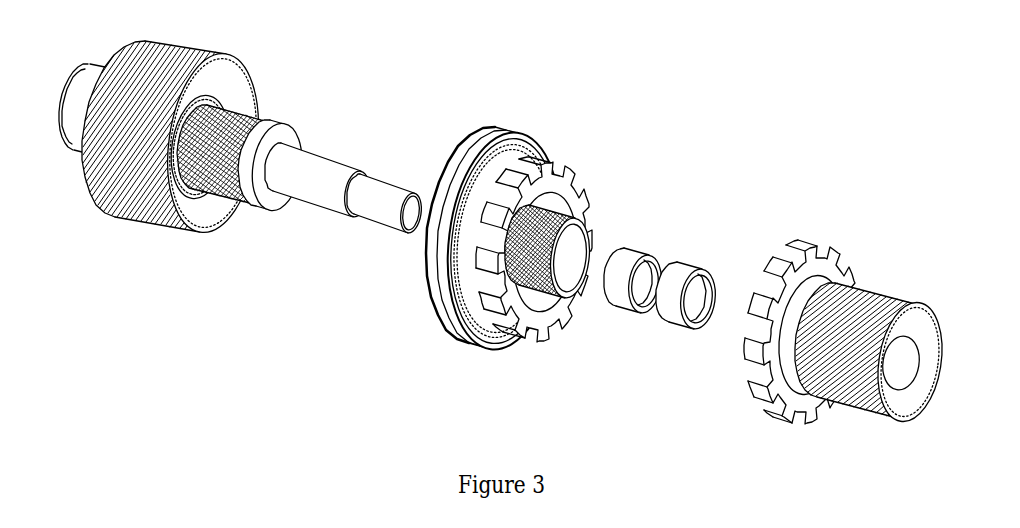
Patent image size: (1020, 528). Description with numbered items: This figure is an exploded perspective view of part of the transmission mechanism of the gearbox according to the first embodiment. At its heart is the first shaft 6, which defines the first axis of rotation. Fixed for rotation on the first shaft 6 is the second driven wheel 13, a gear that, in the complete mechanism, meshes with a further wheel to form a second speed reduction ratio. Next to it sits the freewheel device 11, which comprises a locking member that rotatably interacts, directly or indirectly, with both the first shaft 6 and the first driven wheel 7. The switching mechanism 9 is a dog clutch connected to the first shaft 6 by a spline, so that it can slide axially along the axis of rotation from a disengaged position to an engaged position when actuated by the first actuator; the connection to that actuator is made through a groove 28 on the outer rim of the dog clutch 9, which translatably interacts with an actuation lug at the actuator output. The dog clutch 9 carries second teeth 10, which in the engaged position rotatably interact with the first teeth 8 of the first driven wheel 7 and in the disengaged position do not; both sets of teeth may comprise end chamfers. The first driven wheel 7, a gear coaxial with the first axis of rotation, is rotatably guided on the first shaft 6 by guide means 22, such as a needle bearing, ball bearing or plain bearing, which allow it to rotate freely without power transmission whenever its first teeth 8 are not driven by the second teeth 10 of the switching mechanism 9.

The second driven wheel 13 is at (138, 232).
The freewheel device 11 is at (278, 128).
The first shaft 6 is at (315, 218).
The switching mechanism 9 is at (462, 163).
The groove 28 is at (508, 138).
The second teeth 10 is at (597, 190).
The guide means 22 is at (677, 253).
The first teeth 8 is at (808, 252).
The first driven wheel 7 is at (885, 288).